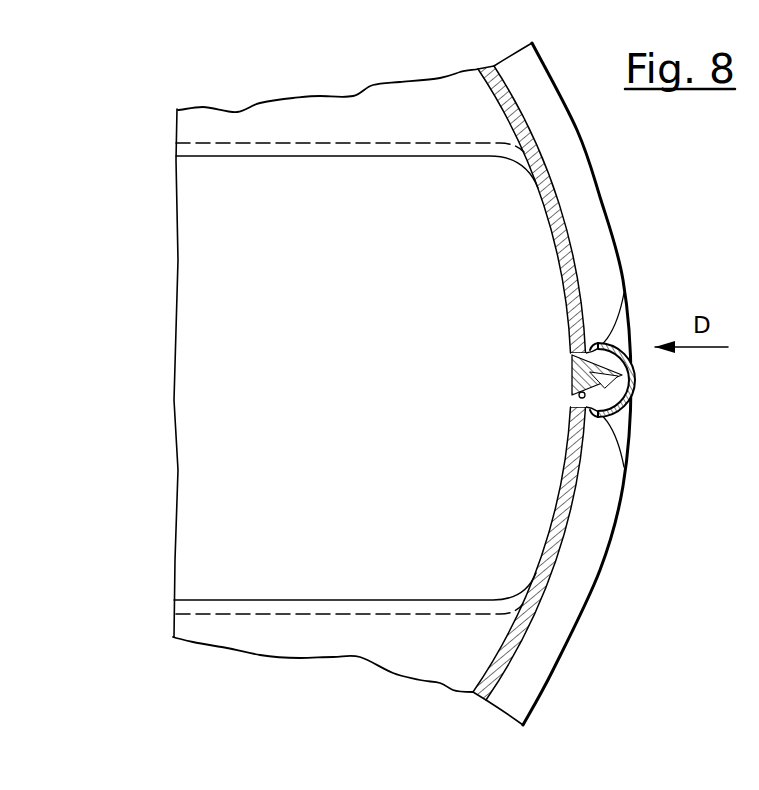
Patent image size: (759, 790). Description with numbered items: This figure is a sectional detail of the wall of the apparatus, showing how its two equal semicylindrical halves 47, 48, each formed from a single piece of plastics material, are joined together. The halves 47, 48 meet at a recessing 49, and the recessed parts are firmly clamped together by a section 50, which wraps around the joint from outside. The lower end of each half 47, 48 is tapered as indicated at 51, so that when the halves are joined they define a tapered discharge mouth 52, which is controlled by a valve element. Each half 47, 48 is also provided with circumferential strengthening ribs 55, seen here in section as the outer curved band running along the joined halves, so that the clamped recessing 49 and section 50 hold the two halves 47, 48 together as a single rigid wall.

The semicylindrical half 47 is at (552, 227).
The semicylindrical half 48 is at (556, 520).
The recessing 49 is at (596, 378).
The section 50 is at (633, 400).
The tapered lower end 51 is at (390, 128).
The discharge mouth 52 is at (215, 455).
The circumferential strengthening rib 55 is at (580, 173).